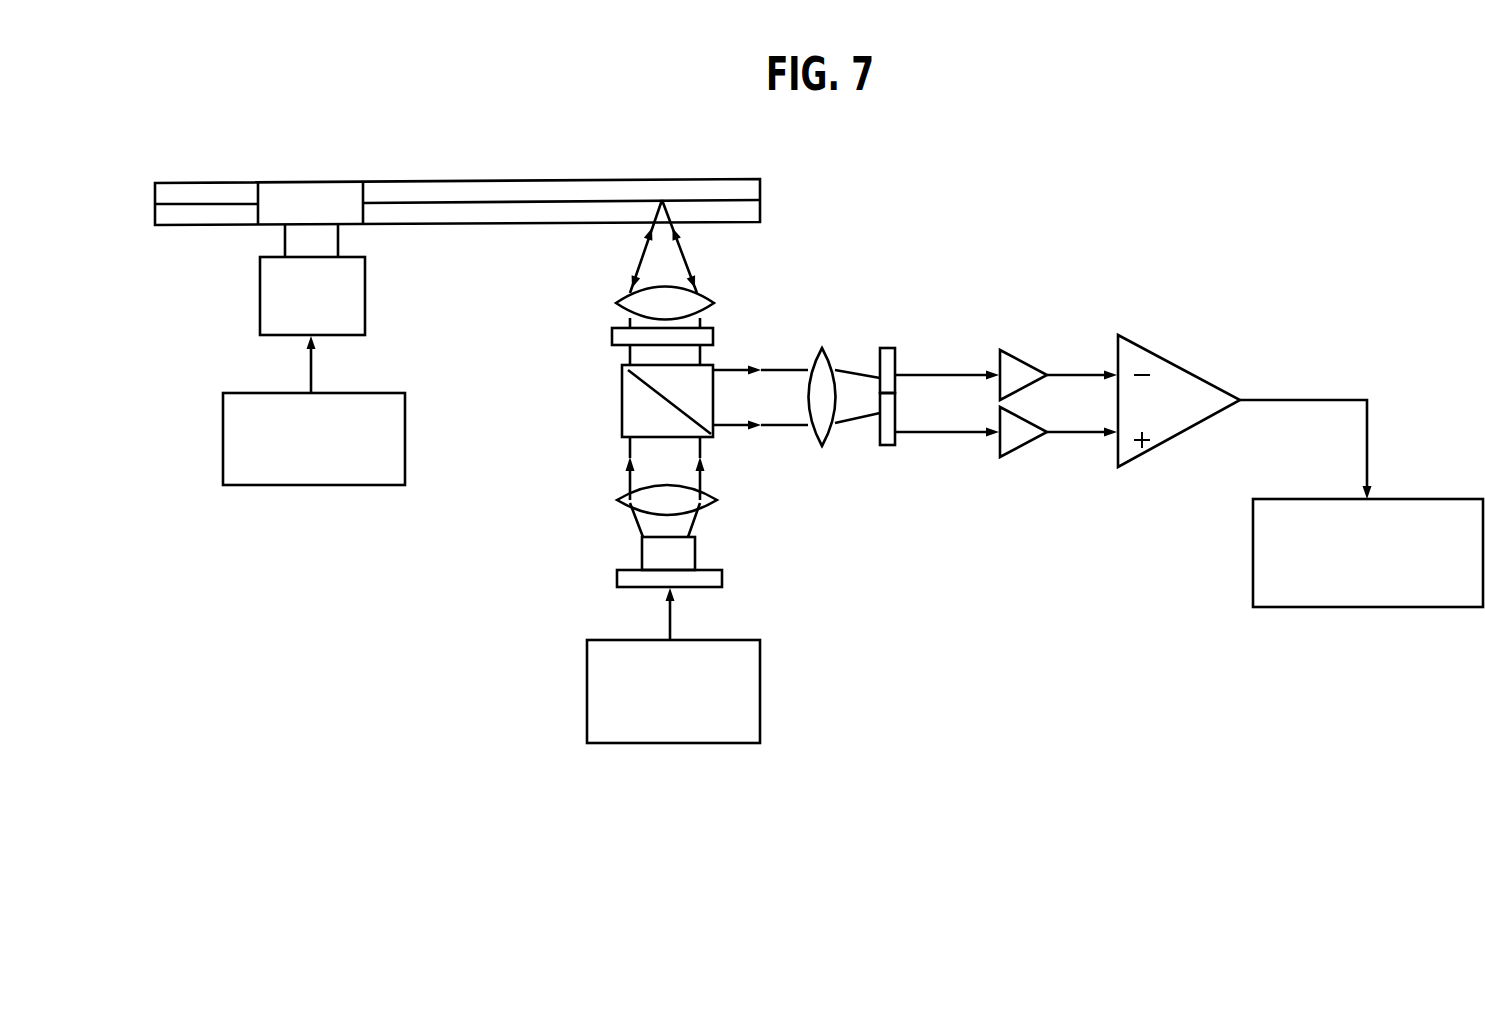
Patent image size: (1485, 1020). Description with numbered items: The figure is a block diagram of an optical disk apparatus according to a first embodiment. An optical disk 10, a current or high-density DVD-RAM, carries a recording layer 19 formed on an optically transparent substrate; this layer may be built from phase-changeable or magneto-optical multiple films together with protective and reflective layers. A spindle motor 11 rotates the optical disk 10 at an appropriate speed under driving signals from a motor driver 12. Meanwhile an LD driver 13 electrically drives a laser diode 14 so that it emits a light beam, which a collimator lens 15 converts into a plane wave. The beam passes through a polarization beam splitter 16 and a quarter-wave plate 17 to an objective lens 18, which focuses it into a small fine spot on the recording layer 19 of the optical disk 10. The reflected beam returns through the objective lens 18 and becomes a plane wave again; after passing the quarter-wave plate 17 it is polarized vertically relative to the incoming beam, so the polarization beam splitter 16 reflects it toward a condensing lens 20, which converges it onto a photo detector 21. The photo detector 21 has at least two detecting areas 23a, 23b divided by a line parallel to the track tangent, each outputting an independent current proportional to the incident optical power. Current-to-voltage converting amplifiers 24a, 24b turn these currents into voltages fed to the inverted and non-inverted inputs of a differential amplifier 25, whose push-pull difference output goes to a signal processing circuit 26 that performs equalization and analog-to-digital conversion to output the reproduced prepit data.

The optical disk 10 is at (504, 159).
The spindle motor 11 is at (365, 293).
The motor driver 12 is at (405, 441).
The LD driver 13 is at (760, 686).
The laser diode 14 is at (695, 553).
The collimator lens 15 is at (717, 490).
The polarization beam splitter 16 is at (640, 414).
The quarter-wave plate 17 is at (713, 333).
The objective lens 18 is at (629, 303).
The recording layer 19 is at (760, 188).
The condensing lens 20 is at (831, 430).
The photo detector 21 is at (926, 378).
The detecting area 23a is at (890, 365).
The detecting area 23b is at (897, 440).
The current-to-voltage converting amplifier 24a is at (1018, 360).
The current-to-voltage converting amplifier 24b is at (1027, 446).
The differential amplifier 25 is at (1168, 355).
The signal processing circuit 26 is at (1447, 497).